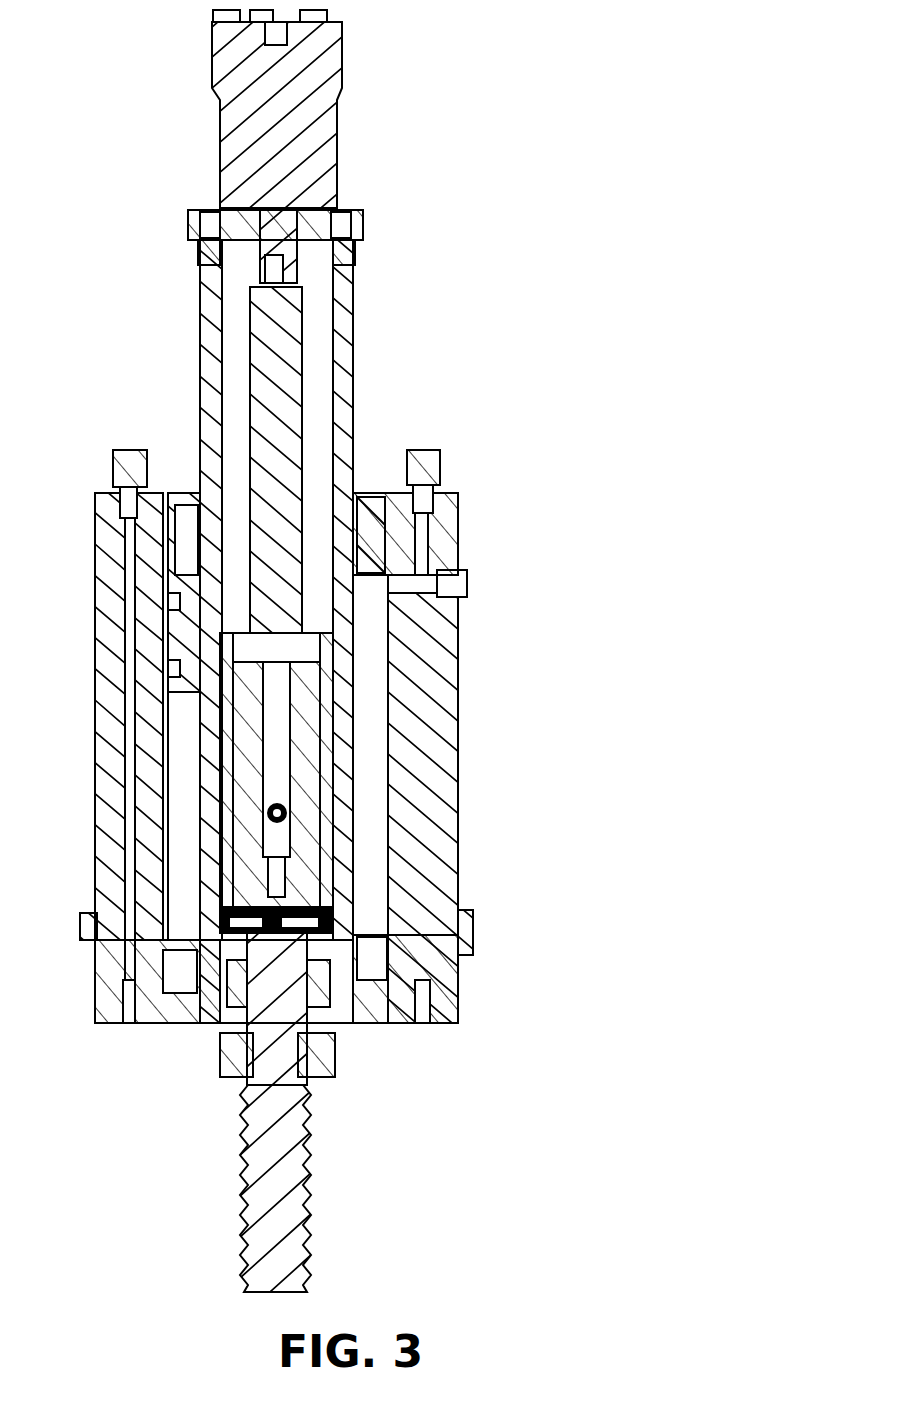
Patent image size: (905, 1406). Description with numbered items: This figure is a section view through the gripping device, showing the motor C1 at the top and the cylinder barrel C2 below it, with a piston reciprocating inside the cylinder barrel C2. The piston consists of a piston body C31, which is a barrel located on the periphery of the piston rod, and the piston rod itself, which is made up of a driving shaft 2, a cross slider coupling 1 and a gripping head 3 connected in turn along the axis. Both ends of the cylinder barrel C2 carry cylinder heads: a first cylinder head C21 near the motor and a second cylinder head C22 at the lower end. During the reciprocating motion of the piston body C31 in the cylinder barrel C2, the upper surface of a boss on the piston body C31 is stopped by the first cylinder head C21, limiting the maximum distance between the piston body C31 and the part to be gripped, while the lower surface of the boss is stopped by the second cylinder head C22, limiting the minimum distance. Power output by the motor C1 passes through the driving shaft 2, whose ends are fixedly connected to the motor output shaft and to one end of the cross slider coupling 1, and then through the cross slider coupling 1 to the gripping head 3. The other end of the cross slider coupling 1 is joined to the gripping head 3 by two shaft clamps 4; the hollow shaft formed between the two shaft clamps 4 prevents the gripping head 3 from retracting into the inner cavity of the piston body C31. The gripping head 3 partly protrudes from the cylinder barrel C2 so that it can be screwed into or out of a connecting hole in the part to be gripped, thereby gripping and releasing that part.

The motor C1 is at (270, 213).
The piston body C31 is at (210, 305).
The driving shaft 2 is at (278, 340).
The first cylinder head C21 is at (375, 520).
The cross slider coupling 1 is at (300, 725).
The cylinder barrel C2 is at (425, 780).
The second cylinder head C22 is at (375, 985).
The shaft clamp 4 is at (330, 1068).
The gripping head 3 is at (290, 1170).